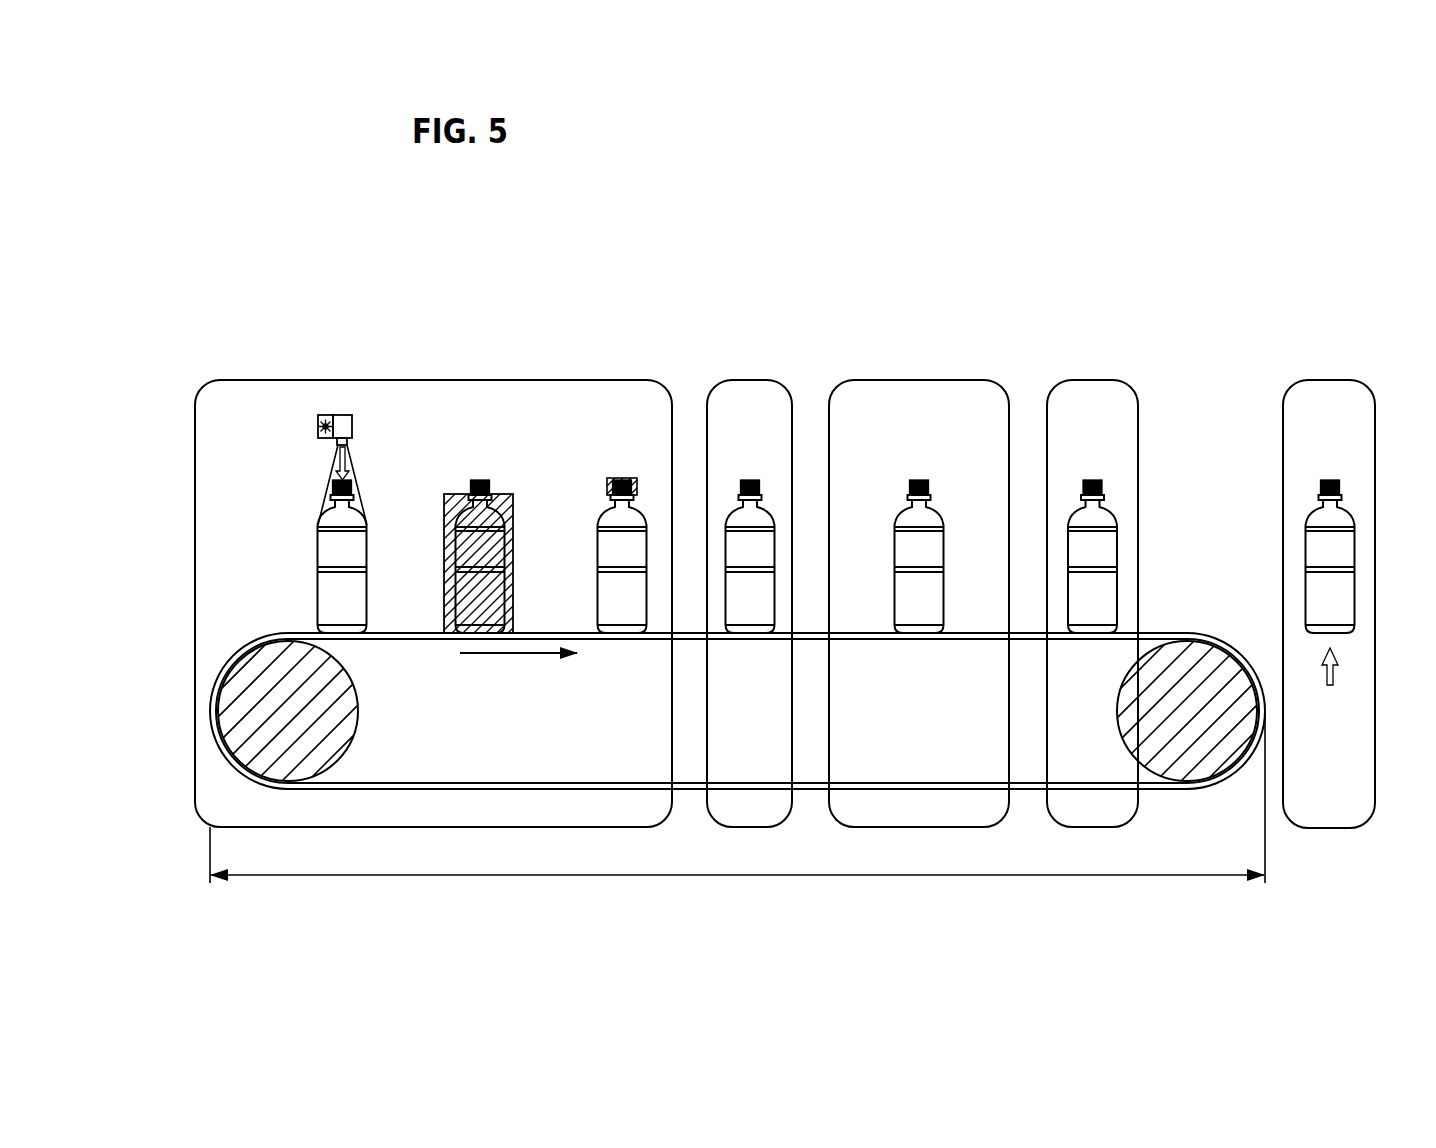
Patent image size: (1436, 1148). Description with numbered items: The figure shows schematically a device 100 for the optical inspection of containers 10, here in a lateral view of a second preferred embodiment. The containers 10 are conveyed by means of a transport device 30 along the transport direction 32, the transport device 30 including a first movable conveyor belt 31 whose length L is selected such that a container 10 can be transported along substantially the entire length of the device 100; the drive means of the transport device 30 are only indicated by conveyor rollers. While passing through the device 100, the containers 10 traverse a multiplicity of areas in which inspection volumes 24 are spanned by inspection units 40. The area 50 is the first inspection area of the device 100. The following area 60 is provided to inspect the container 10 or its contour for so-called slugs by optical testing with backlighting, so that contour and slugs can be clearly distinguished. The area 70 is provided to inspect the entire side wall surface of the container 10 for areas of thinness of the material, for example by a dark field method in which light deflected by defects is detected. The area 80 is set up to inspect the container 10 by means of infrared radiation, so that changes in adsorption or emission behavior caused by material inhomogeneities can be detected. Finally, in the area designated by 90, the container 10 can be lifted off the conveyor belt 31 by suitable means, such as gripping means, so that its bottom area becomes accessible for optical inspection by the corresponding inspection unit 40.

The container 10 is at (306, 573).
The inspection volume 24 is at (355, 483).
The transport device 30 is at (1184, 626).
The conveyor belt 31 is at (288, 633).
The transport direction 32 is at (540, 672).
The inspection unit 40 is at (362, 415).
The area 50 is at (456, 372).
The area 60 is at (751, 375).
The area 70 is at (923, 371).
The area 80 is at (1086, 372).
The area 90 is at (1326, 368).
The device 100 is at (789, 212).